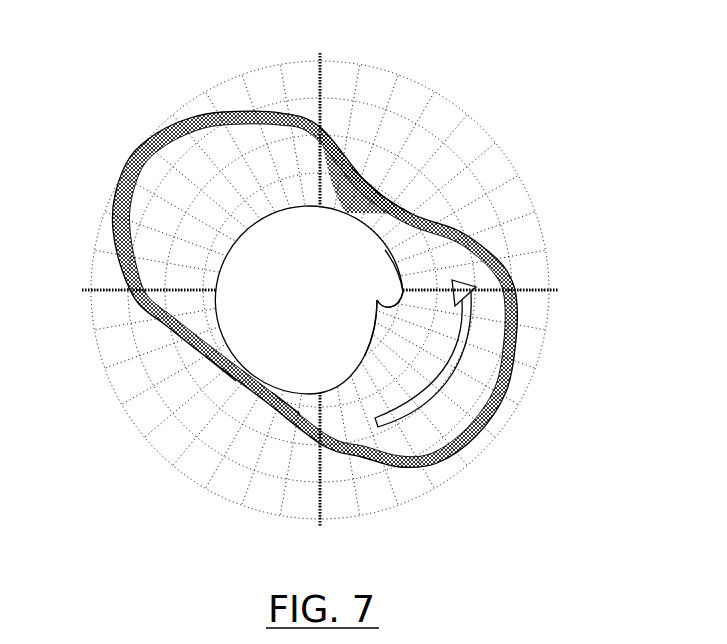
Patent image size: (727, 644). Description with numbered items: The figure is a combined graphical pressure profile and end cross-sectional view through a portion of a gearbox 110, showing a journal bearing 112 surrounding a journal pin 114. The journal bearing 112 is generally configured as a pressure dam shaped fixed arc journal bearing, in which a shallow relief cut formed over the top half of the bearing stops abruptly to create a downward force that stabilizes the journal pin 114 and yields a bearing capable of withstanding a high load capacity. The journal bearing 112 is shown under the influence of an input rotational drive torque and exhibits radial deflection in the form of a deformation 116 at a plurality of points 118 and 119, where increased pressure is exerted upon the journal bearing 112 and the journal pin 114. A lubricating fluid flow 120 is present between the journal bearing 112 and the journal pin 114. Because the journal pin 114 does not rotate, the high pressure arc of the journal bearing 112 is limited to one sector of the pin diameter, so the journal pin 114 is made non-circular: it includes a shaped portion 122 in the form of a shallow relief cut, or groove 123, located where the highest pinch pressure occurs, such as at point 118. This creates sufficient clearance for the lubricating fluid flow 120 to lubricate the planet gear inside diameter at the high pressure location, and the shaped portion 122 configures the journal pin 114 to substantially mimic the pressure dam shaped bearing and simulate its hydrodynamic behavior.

The gearbox 110 is at (524, 48).
The journal bearing 112 is at (513, 278).
The journal pin 114 is at (309, 304).
The deformation 116 is at (384, 156).
The point 118 is at (389, 194).
The point 119 is at (285, 423).
The lubricating fluid flow 120 is at (413, 422).
The shaped portion 122 is at (402, 289).
The groove 123 is at (390, 310).